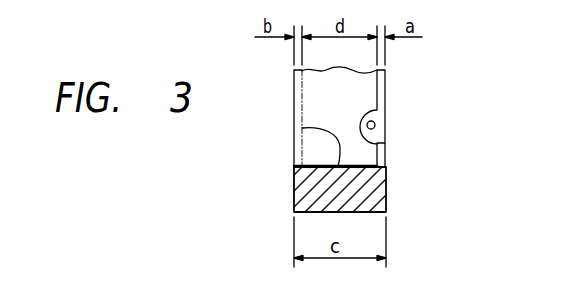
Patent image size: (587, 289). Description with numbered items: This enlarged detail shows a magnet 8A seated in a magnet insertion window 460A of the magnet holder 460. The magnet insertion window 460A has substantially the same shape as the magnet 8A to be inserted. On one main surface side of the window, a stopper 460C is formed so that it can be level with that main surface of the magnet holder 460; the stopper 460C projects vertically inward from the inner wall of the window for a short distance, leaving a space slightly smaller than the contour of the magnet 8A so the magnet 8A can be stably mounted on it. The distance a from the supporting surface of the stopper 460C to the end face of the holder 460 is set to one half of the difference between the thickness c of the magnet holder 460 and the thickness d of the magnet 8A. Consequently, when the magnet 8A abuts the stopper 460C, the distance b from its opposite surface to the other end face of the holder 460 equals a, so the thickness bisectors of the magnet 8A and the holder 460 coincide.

The magnet 8A is at (302, 93).
The magnet insertion window 460A is at (331, 116).
The stopper 460C is at (375, 119).
The magnet holder 460 is at (386, 198).